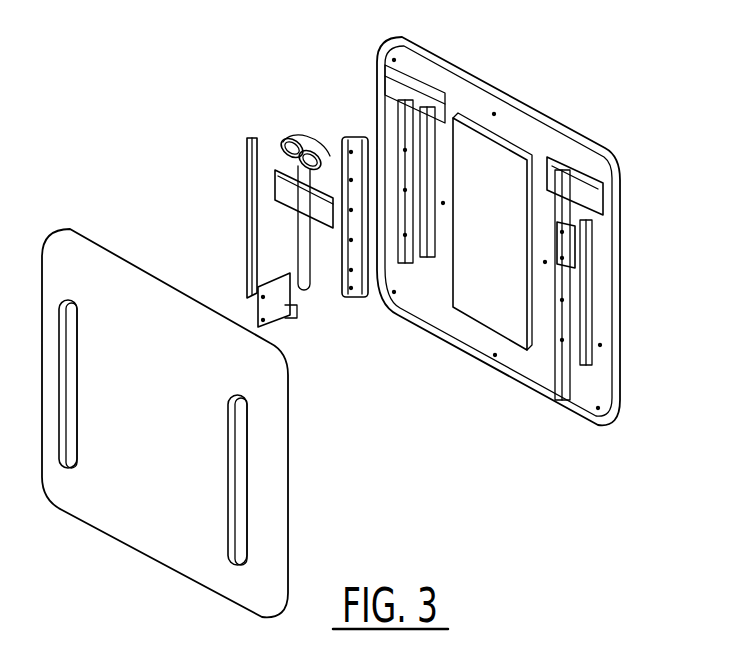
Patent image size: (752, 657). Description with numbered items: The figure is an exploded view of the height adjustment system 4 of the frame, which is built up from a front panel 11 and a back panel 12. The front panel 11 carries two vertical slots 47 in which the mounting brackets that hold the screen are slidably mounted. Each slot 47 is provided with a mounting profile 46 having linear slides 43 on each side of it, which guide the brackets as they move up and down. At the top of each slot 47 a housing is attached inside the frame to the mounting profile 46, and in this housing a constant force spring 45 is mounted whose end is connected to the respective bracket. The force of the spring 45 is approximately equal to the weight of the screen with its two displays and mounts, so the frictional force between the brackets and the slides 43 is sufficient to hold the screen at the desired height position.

The height adjustment system 4 is at (190, 147).
The front panel 11 is at (270, 465).
The back panel 12 is at (458, 102).
The linear slide 43 is at (247, 233).
The spring 45 is at (292, 140).
The mounting profile 46 is at (320, 152).
The vertical slot 47 is at (240, 462).